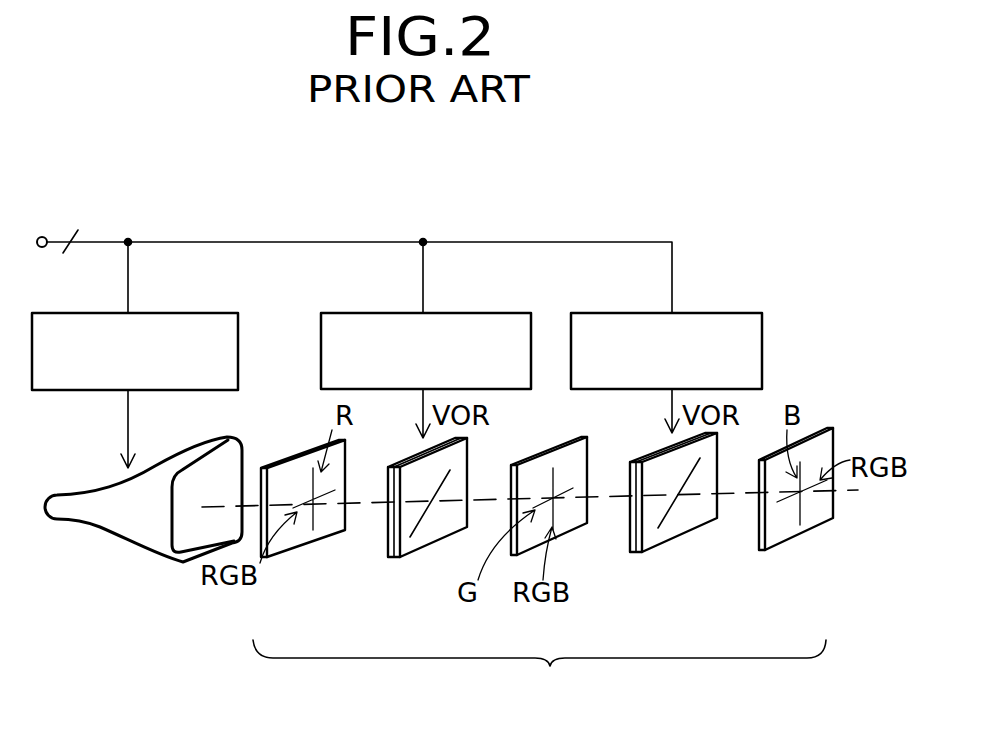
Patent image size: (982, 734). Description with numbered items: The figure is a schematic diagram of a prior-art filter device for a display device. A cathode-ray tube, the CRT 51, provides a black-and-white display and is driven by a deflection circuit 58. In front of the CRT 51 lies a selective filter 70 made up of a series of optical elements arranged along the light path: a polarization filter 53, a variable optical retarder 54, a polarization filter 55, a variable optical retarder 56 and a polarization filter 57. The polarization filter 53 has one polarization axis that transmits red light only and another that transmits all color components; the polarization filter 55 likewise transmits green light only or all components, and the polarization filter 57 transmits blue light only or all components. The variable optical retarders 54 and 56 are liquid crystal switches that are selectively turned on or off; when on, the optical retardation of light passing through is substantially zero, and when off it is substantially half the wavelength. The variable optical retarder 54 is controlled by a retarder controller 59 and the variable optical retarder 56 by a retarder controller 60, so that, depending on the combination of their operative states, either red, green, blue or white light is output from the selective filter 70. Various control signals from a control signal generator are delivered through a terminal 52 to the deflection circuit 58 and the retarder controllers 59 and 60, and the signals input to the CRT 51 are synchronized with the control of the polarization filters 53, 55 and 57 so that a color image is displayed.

The CRT 51 is at (108, 532).
The terminal 52 is at (48, 237).
The polarization filter 53 is at (300, 553).
The variable optical retarder 54 is at (425, 550).
The polarization filter 55 is at (573, 533).
The variable optical retarder 56 is at (682, 533).
The polarization filter 57 is at (797, 530).
The deflection circuit 58 is at (224, 306).
The VOR controller 59 is at (502, 313).
The VOR controller 60 is at (732, 313).
The selective filter 70 is at (539, 672).